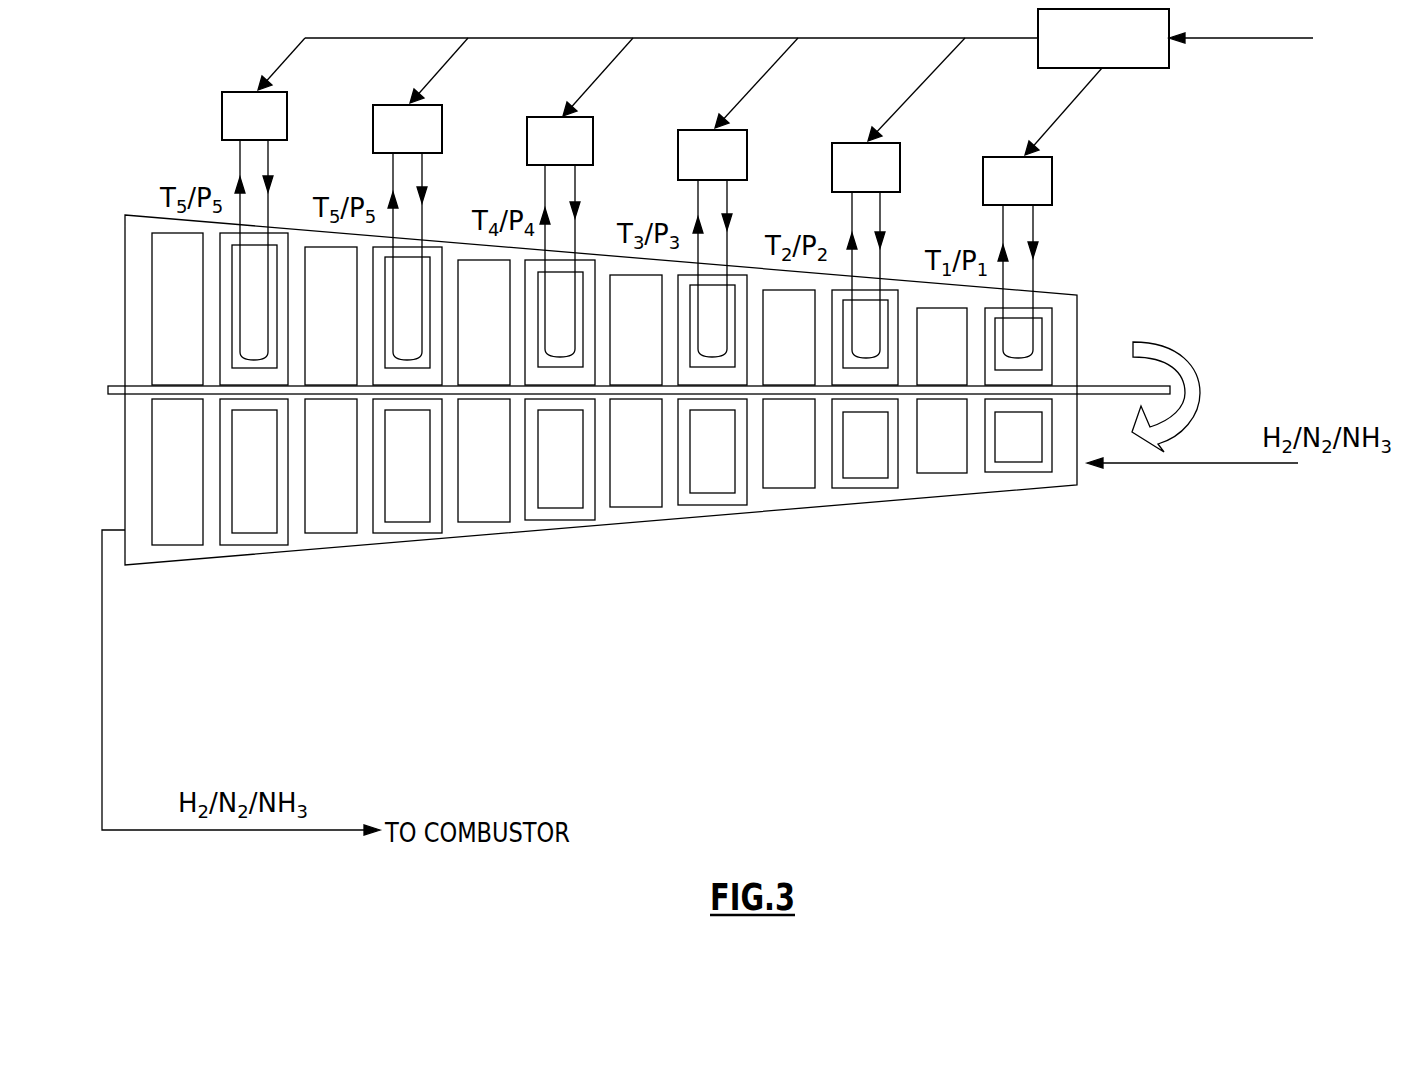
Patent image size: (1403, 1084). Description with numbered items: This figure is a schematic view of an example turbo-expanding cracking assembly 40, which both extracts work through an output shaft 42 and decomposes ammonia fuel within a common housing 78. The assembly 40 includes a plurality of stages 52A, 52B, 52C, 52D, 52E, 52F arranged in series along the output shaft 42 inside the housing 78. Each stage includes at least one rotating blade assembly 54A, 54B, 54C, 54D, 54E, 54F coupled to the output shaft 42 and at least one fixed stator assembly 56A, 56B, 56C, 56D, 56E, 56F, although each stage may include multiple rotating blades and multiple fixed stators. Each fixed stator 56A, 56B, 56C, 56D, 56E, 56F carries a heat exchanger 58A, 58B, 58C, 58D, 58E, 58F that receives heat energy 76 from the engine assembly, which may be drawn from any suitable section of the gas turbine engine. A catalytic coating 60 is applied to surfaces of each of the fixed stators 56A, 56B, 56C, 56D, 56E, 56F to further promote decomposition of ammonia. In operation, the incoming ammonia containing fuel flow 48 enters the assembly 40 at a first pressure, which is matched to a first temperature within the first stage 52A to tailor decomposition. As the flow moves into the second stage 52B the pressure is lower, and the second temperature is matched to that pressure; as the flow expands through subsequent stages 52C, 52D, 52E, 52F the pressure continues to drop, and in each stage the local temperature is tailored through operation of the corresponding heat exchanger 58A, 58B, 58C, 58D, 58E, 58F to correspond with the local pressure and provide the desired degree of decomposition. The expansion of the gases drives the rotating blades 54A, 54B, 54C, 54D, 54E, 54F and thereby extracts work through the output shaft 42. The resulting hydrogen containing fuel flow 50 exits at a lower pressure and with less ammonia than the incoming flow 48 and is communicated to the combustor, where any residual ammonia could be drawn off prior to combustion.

The turbo-expanding cracking assembly 40 is at (692, 441).
The output shaft 42 is at (1095, 386).
The ammonia containing fuel flow 48 is at (1160, 463).
The hydrogen containing fuel flow 50 is at (283, 830).
The first stage 52A is at (993, 489).
The second stage 52B is at (840, 489).
The stage 52C is at (687, 489).
The stage 52D is at (535, 490).
The stage 52E is at (381, 490).
The stage 52F is at (229, 488).
The rotating blade assembly 54A is at (947, 450).
The rotating blade assembly 54B is at (795, 472).
The rotating blade assembly 54C is at (642, 488).
The rotating blade assembly 54D is at (490, 500).
The rotating blade assembly 54E is at (337, 516).
The rotating blade assembly 54F is at (183, 527).
The fixed stator assembly 56A is at (1008, 460).
The fixed stator assembly 56B is at (853, 482).
The fixed stator assembly 56C is at (702, 500).
The fixed stator assembly 56D is at (548, 508).
The fixed stator assembly 56E is at (397, 523).
The fixed stator assembly 56F is at (242, 533).
The heat exchanger 58A is at (995, 194).
The heat exchanger 58B is at (843, 180).
The heat exchanger 58C is at (690, 168).
The heat exchanger 58D is at (537, 154).
The heat exchanger 58E is at (385, 142).
The heat exchanger 58F is at (232, 129).
The catalytic coating 60 is at (255, 522).
The heat energy 76 is at (1089, 51).
The housing 78 is at (1072, 285).